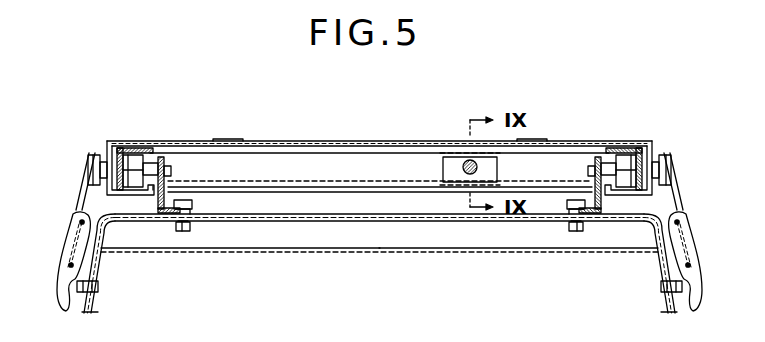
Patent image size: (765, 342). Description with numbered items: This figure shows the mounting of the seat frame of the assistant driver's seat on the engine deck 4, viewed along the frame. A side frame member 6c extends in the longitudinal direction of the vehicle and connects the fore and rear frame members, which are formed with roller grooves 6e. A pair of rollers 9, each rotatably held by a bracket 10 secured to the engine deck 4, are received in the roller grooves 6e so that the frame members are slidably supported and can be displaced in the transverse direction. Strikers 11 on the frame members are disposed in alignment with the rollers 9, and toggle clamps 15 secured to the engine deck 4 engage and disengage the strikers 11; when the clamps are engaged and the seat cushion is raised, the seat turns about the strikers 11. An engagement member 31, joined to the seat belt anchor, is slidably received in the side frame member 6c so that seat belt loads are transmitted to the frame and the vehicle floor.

The engine deck 4 is at (288, 216).
The side frame member 6c is at (367, 150).
The roller groove 6e is at (135, 147).
The roller 9 is at (137, 183).
The bracket 10 is at (170, 195).
The striker 11 is at (86, 163).
The toggle clamp 15 is at (58, 285).
The engagement member 31 is at (456, 158).